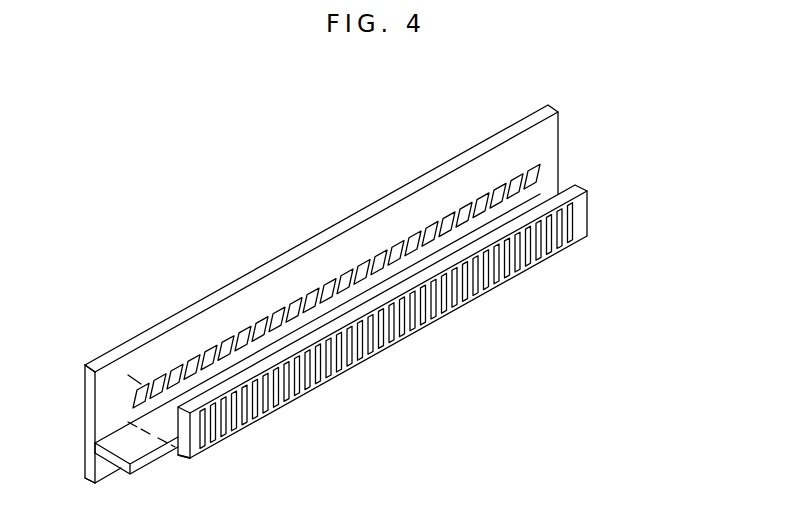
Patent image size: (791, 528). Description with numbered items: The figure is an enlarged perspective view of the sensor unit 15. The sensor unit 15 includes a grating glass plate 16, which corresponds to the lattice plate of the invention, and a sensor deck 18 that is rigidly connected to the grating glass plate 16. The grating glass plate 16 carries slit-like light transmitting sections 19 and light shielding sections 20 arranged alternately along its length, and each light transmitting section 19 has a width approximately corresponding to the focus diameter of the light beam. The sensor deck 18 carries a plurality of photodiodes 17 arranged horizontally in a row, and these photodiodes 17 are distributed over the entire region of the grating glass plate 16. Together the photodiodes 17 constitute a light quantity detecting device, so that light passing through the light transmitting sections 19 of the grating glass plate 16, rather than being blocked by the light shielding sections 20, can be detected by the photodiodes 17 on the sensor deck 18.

The sensor unit 15 is at (531, 154).
The grating glass plate 16 is at (588, 231).
The photodiodes 17 is at (468, 213).
The sensor deck 18 is at (85, 411).
The light transmitting sections 19 is at (273, 404).
The light shielding sections 20 is at (208, 447).